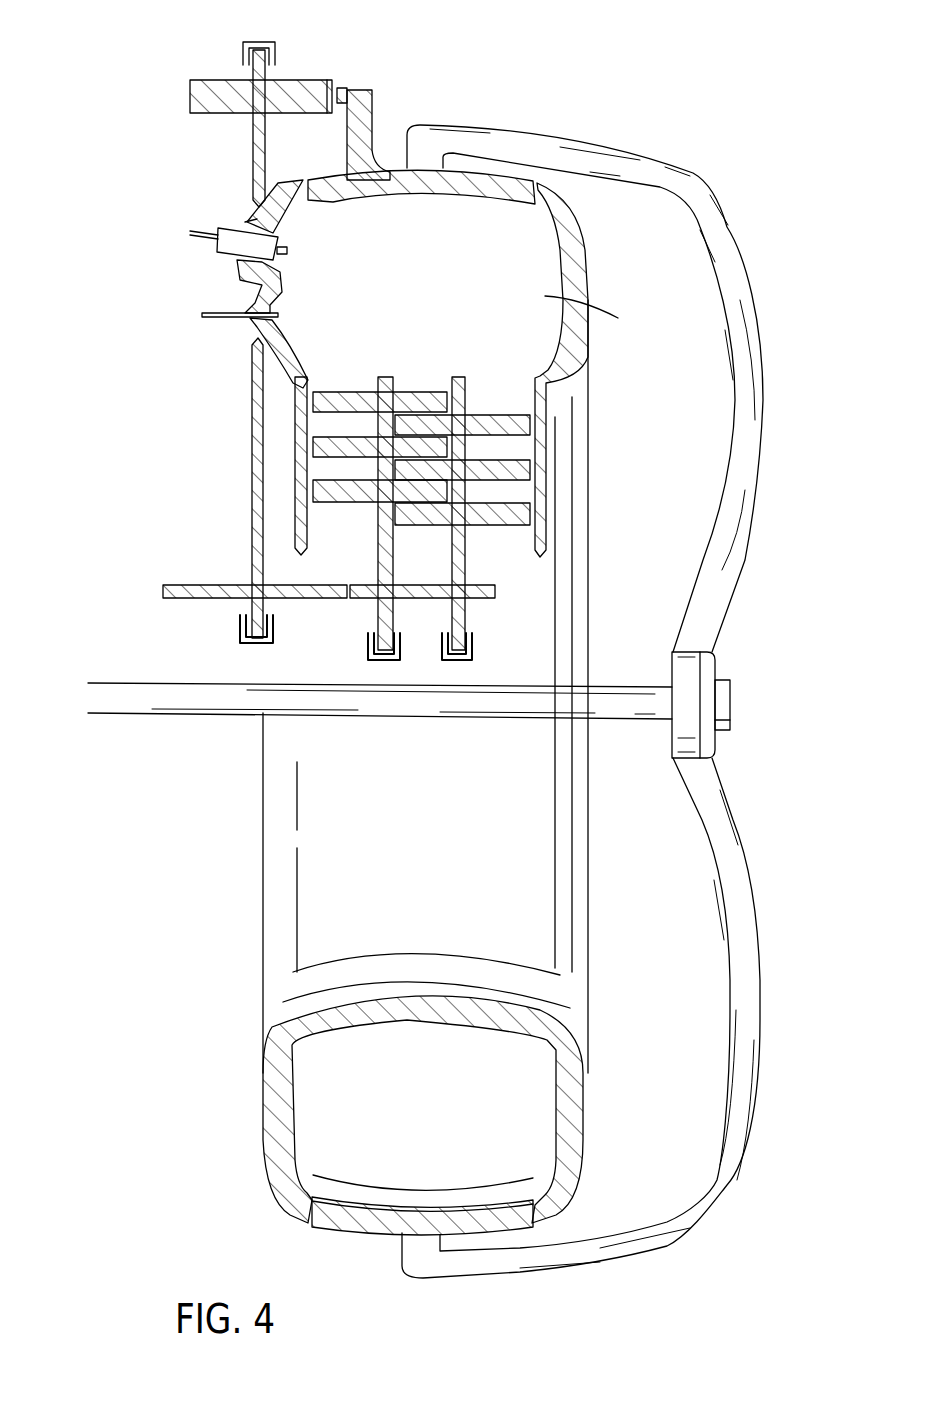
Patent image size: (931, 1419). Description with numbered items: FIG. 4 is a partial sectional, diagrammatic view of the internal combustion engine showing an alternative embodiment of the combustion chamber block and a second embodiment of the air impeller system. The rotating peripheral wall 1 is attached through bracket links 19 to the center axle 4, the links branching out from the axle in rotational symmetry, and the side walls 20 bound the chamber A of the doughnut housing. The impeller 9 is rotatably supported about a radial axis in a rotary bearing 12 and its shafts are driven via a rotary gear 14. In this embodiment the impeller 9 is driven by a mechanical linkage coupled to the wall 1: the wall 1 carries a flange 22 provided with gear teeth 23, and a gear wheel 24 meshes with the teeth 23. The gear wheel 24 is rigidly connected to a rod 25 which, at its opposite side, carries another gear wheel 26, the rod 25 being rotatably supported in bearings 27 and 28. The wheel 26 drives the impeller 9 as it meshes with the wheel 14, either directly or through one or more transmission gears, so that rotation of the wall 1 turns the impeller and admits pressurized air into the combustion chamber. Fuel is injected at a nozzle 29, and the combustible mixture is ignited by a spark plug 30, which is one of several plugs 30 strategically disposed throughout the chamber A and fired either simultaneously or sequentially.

The peripheral wall 1 is at (490, 170).
The center axle 4 is at (240, 700).
The impeller system 9 is at (560, 525).
The rotary bearing 12 is at (444, 659).
The rotary gear 14 is at (490, 596).
The bracket links 19 is at (745, 290).
The side walls 20 is at (577, 230).
The flange 22 is at (362, 140).
The gear teeth 23 is at (345, 88).
The gear wheel 24 is at (205, 93).
The rod 25 is at (252, 405).
The gear wheel 26 is at (190, 588).
The bearing 27 is at (265, 640).
The bearing 28 is at (250, 42).
The nozzle 29 is at (222, 312).
The spark plug 30 is at (238, 228).
The chamber A is at (593, 317).